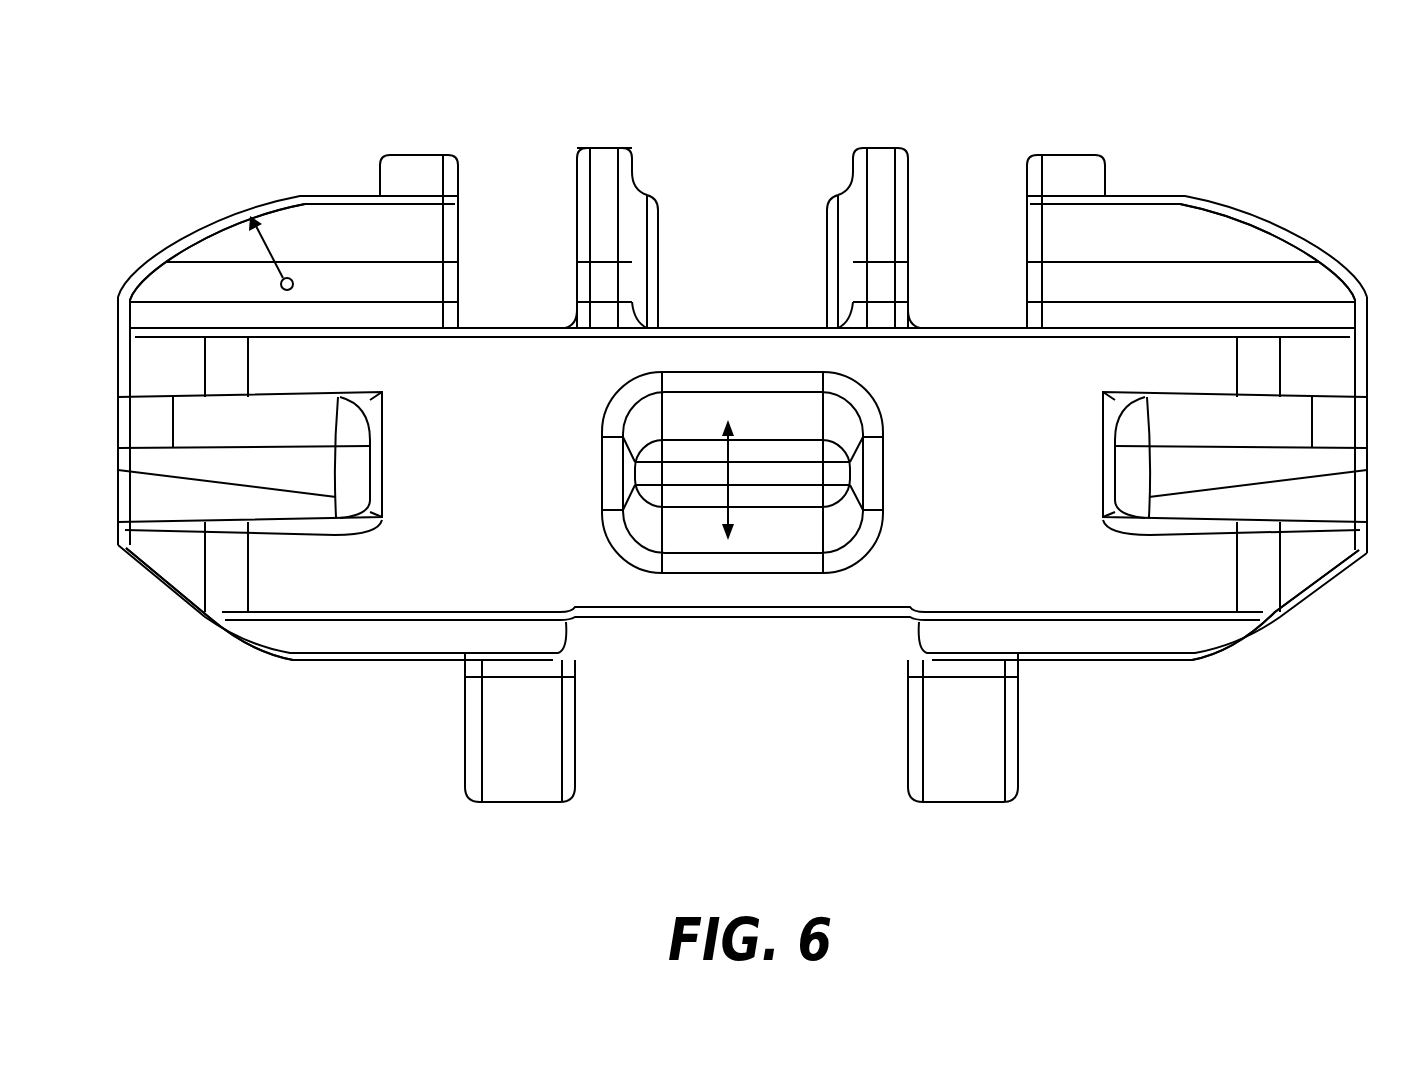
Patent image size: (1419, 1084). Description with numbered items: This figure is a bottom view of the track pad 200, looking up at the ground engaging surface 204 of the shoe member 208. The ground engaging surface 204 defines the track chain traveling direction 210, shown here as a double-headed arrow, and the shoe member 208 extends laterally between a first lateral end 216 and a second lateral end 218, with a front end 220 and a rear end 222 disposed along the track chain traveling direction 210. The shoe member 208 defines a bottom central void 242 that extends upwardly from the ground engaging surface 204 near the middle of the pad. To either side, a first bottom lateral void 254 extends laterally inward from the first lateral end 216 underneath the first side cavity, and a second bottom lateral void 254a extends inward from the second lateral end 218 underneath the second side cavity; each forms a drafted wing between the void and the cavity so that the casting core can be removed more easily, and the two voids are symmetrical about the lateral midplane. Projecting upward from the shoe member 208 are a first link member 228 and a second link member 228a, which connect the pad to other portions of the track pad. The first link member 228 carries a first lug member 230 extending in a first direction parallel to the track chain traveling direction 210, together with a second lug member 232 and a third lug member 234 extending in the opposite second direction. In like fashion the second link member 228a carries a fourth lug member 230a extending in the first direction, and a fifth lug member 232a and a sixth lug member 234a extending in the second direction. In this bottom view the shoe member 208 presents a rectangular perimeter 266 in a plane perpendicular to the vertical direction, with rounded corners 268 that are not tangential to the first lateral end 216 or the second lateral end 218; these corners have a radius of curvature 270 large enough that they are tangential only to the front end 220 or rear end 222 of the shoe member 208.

The track pad 200 is at (1225, 143).
The ground engaging surface 204 is at (1005, 505).
The shoe member 208 is at (1315, 233).
The track chain traveling direction 210 is at (732, 472).
The first lateral end 216 is at (1365, 470).
The second lateral end 218 is at (117, 530).
The front end 220 is at (345, 194).
The rear end 222 is at (410, 662).
The first link member 228 is at (1096, 128).
The second link member 228a is at (630, 125).
The first lug member 230 is at (985, 805).
The fourth lug member 230a is at (525, 805).
The second lug member 232 is at (883, 150).
The fifth lug member 232a is at (600, 158).
The third lug member 234 is at (1055, 158).
The sixth lug member 234a is at (420, 153).
The bottom central void 242 is at (761, 523).
The first bottom lateral void 254 is at (1293, 503).
The second bottom lateral void 254a is at (258, 494).
The rectangular perimeter 266 is at (1106, 668).
The rounded corners 268 is at (198, 230).
The radius of curvature 270 is at (274, 262).